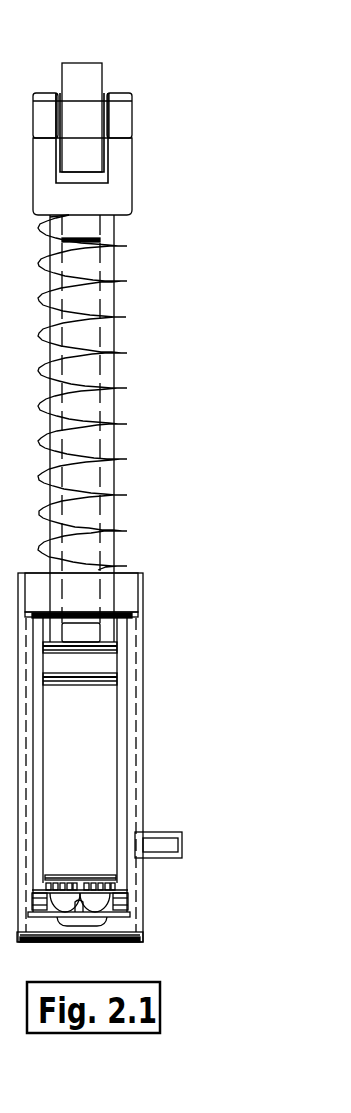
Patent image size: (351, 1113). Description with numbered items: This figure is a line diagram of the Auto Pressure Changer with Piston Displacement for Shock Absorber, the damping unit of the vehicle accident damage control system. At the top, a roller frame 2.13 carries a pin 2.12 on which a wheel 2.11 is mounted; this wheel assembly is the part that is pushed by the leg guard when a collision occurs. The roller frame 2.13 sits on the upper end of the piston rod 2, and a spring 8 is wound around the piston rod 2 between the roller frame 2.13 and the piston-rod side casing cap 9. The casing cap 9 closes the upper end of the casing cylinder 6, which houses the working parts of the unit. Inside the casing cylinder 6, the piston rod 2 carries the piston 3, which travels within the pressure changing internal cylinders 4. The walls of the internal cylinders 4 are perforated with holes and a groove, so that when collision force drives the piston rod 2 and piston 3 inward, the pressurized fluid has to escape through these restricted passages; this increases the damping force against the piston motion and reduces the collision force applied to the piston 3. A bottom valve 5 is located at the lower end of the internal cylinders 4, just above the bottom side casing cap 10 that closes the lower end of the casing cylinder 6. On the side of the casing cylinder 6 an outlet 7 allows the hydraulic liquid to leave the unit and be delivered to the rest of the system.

The wheel attached to roller 2.11 is at (83, 61).
The pin attached to roller 2.12 is at (119, 123).
The roller frame 2.13 is at (118, 192).
The piston rod 2 is at (109, 265).
The spring 8 is at (116, 323).
The piston-rod side casing cap 9 is at (124, 587).
The casing cylinder 6 is at (144, 632).
The piston 3 is at (108, 667).
The pressure changing internal cylinders 4 is at (124, 732).
The outlet of hydraulic liquid 7 is at (151, 843).
The bottom valve 5 is at (114, 878).
The bottom side casing cap 10 is at (124, 930).